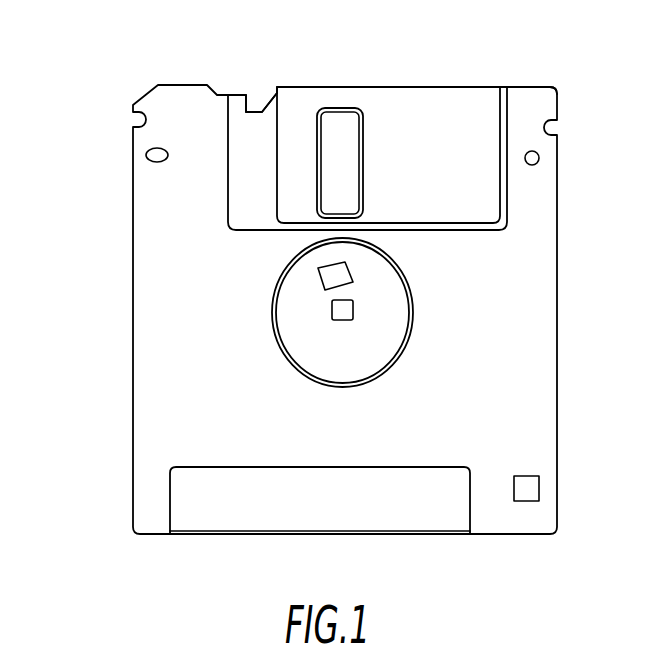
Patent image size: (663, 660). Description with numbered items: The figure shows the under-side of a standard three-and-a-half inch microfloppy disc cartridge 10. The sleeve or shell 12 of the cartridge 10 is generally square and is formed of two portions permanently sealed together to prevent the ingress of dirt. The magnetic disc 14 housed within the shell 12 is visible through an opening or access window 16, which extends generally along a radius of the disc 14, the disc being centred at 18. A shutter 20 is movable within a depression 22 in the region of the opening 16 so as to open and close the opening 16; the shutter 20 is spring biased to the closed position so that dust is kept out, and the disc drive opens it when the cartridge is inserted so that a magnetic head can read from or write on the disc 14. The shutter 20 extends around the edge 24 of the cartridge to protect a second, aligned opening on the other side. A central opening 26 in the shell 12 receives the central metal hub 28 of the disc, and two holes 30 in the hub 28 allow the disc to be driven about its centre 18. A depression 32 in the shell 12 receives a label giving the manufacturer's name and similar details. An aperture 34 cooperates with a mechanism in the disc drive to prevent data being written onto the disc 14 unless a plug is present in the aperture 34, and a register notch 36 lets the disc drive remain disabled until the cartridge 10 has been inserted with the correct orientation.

The cartridge 10 is at (119, 313).
The shell 12 is at (147, 444).
The magnetic disc 14 is at (332, 135).
The access window 16 is at (357, 138).
The disc centre 18 is at (353, 315).
The shutter 20 is at (447, 120).
The depression 22 is at (229, 190).
The edge of the cartridge 24 is at (530, 87).
The central opening 26 is at (288, 355).
The hub 28 is at (297, 310).
The holes 30 is at (353, 305).
The label depression 32 is at (170, 502).
The aperture 34 is at (539, 488).
The register notch 36 is at (270, 100).